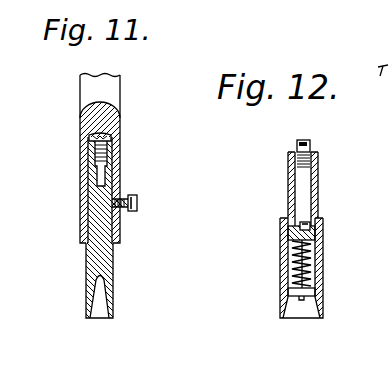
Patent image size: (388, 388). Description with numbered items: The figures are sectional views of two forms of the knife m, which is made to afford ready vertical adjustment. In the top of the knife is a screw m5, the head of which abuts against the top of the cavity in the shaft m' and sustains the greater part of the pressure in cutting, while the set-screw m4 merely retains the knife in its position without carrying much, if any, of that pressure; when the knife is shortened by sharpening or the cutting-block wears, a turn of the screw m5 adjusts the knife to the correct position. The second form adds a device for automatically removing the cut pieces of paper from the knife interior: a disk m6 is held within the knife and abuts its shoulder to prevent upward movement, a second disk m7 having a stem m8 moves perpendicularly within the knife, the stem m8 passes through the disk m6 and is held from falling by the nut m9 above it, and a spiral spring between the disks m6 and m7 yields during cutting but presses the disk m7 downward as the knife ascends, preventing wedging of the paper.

In FIG. 11, the knife m is at (114, 229).
In FIG. 11, the shaft m' is at (116, 159).
In FIG. 11, the set-screw m4 is at (138, 203).
In FIG. 11, the screw m5 is at (112, 139).
In FIG. 12, the disk m6 is at (313, 230).
In FIG. 12, the second disk m7 is at (316, 299).
In FIG. 12, the stem m8 is at (306, 268).
In FIG. 12, the nut m9 is at (317, 222).